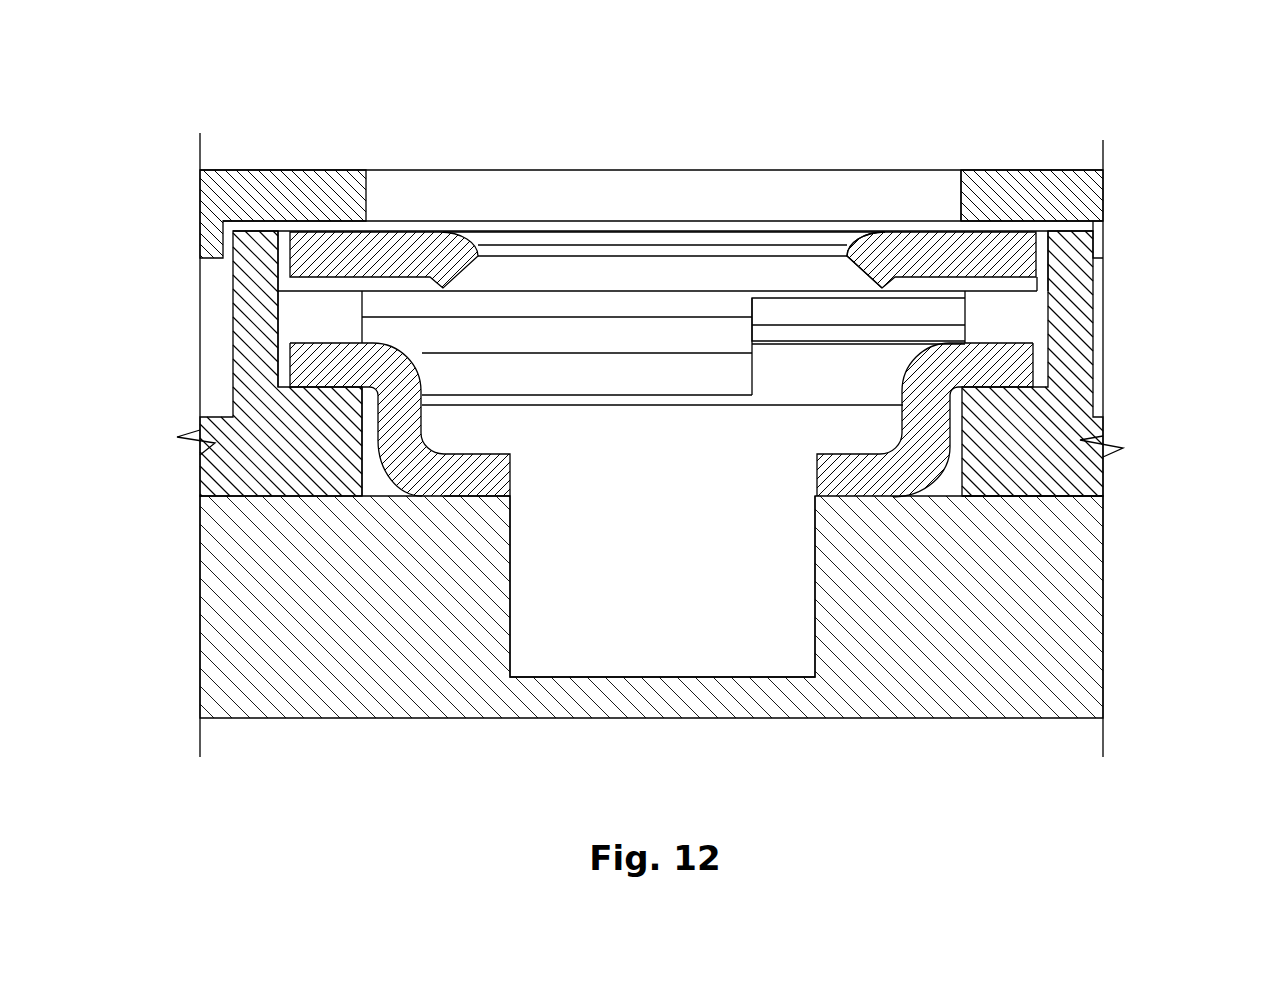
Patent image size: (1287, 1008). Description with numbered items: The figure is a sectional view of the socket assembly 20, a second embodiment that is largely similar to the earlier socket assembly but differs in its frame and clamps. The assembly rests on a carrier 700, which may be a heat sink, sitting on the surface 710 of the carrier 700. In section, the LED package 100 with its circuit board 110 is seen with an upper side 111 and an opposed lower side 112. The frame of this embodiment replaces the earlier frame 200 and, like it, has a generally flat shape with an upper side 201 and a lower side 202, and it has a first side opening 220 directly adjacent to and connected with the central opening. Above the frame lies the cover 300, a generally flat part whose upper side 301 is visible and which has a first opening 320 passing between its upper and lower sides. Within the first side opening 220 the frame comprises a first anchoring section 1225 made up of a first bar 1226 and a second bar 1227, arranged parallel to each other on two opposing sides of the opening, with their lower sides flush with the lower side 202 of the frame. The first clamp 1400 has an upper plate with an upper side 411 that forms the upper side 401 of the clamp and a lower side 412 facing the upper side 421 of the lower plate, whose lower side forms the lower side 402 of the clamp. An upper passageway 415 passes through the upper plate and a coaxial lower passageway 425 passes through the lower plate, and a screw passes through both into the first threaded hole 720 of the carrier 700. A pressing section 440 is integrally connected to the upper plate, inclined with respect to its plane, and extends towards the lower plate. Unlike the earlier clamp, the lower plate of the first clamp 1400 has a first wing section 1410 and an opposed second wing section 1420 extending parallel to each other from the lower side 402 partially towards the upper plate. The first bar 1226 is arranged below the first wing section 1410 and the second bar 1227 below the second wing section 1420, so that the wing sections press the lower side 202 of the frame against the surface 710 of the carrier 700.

The socket assembly 20 is at (171, 91).
The LED package 100 is at (587, 258).
The circuit board 110 is at (470, 405).
The upper side 111 is at (553, 405).
The lower side 112 is at (378, 497).
The frame 200 is at (1073, 486).
The upper side 201 is at (1073, 245).
The lower side 202 is at (1018, 498).
The first side opening 220 is at (947, 465).
The cover 300 is at (651, 179).
The upper side 301 is at (1007, 167).
The first opening 320 is at (960, 195).
The upper side 401 is at (359, 199).
The upper side 411 is at (315, 231).
The lower side 412 is at (364, 277).
The upper passageway 415 is at (845, 255).
The lower side 402 is at (443, 655).
The upper side 421 is at (470, 454).
The lower passageway 425 is at (815, 472).
The pressing section 440 is at (622, 335).
The carrier 700 is at (1053, 700).
The surface 710 is at (1037, 487).
The first threaded hole 720 is at (637, 643).
The first anchoring section 1225 is at (652, 415).
The first bar 1226 is at (1005, 387).
The second bar 1227 is at (313, 387).
The first clamp 1400 is at (423, 467).
The first wing section 1410 is at (985, 363).
The second wing section 1420 is at (293, 355).